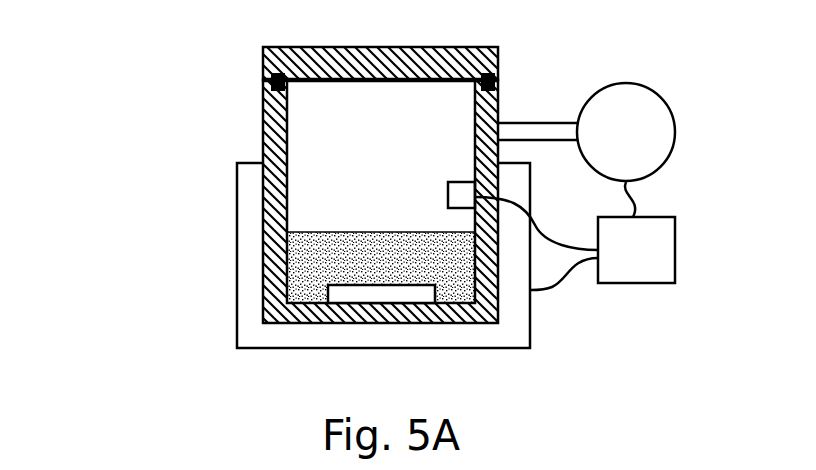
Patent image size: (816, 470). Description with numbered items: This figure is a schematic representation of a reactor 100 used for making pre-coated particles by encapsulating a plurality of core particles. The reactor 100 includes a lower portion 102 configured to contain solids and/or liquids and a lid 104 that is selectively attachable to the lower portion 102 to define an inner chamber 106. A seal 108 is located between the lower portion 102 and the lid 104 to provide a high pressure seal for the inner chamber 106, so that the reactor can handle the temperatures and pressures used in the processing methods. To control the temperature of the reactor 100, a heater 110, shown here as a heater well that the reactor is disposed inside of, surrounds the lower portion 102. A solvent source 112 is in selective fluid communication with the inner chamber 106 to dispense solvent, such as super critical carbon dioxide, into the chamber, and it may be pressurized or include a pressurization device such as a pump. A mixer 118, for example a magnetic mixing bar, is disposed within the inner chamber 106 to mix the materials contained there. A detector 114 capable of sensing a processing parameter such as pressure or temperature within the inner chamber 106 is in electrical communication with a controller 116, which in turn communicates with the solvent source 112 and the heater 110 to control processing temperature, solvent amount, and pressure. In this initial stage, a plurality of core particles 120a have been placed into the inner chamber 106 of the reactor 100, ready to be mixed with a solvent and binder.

The reactor 100 is at (153, 42).
The lower portion 102 is at (265, 128).
The lid 104 is at (265, 50).
The inner chamber 106 is at (455, 123).
The seal 108 is at (483, 82).
The heater 110 is at (252, 183).
The solvent source 112 is at (643, 132).
The detector 114 is at (463, 197).
The controller 116 is at (648, 252).
The mixer 118 is at (387, 290).
The core particles 120a is at (322, 260).